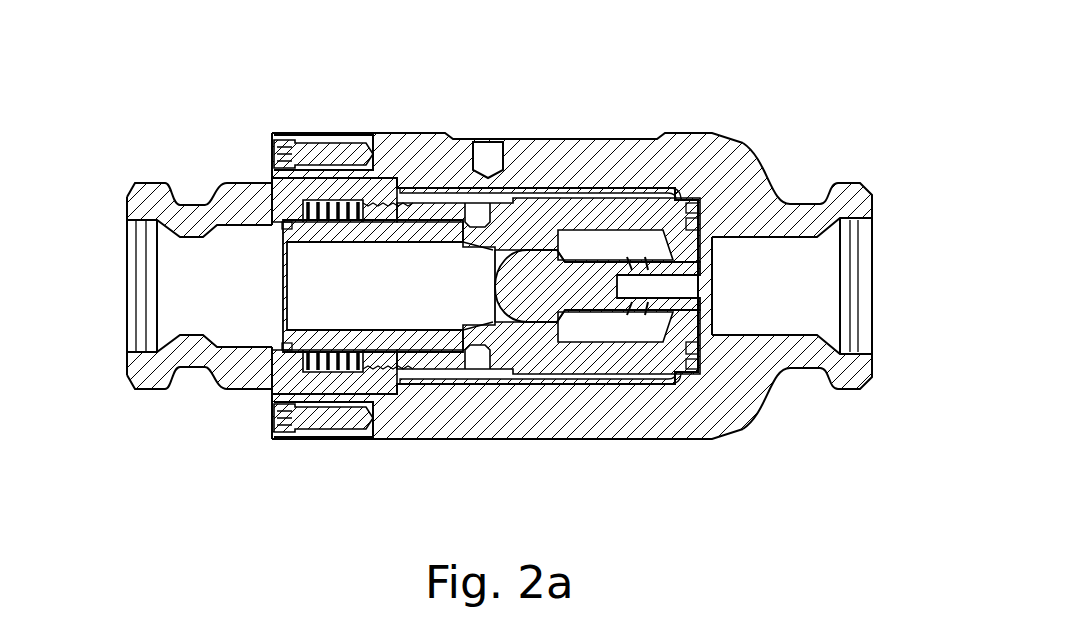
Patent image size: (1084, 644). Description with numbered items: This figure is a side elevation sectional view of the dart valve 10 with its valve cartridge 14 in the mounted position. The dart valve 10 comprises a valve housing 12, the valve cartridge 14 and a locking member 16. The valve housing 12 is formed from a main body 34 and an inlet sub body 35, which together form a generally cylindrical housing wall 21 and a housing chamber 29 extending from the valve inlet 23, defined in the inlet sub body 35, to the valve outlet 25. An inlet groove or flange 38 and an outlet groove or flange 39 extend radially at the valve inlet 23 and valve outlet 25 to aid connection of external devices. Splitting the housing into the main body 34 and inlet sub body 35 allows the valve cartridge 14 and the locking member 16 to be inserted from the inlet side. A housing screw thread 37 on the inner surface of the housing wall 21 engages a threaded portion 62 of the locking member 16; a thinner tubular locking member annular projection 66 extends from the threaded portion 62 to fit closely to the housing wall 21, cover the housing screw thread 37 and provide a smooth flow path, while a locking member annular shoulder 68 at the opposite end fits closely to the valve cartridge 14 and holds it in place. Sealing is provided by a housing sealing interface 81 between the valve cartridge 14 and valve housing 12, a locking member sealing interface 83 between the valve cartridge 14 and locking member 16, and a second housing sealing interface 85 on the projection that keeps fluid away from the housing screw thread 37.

The dart valve 10 is at (519, 86).
The valve housing 12 is at (653, 90).
The valve cartridge 14 is at (595, 198).
The locking member 16 is at (393, 280).
The housing wall 21 is at (637, 407).
The valve inlet 23 is at (118, 243).
The valve outlet 25 is at (878, 236).
The housing chamber 29 is at (538, 373).
The main body 34 is at (438, 407).
The inlet sub body 35 is at (256, 368).
The housing screw thread 37 is at (327, 367).
The inlet groove or flange 38 is at (198, 358).
The outlet groove or flange 39 is at (807, 378).
The threaded portion 62 is at (400, 216).
The locking member annular projection 66 is at (275, 167).
The locking member annular shoulder 68 is at (477, 212).
The housing sealing interface 81 is at (690, 377).
The locking member sealing interface 83 is at (493, 350).
The second housing sealing interface 85 is at (286, 352).